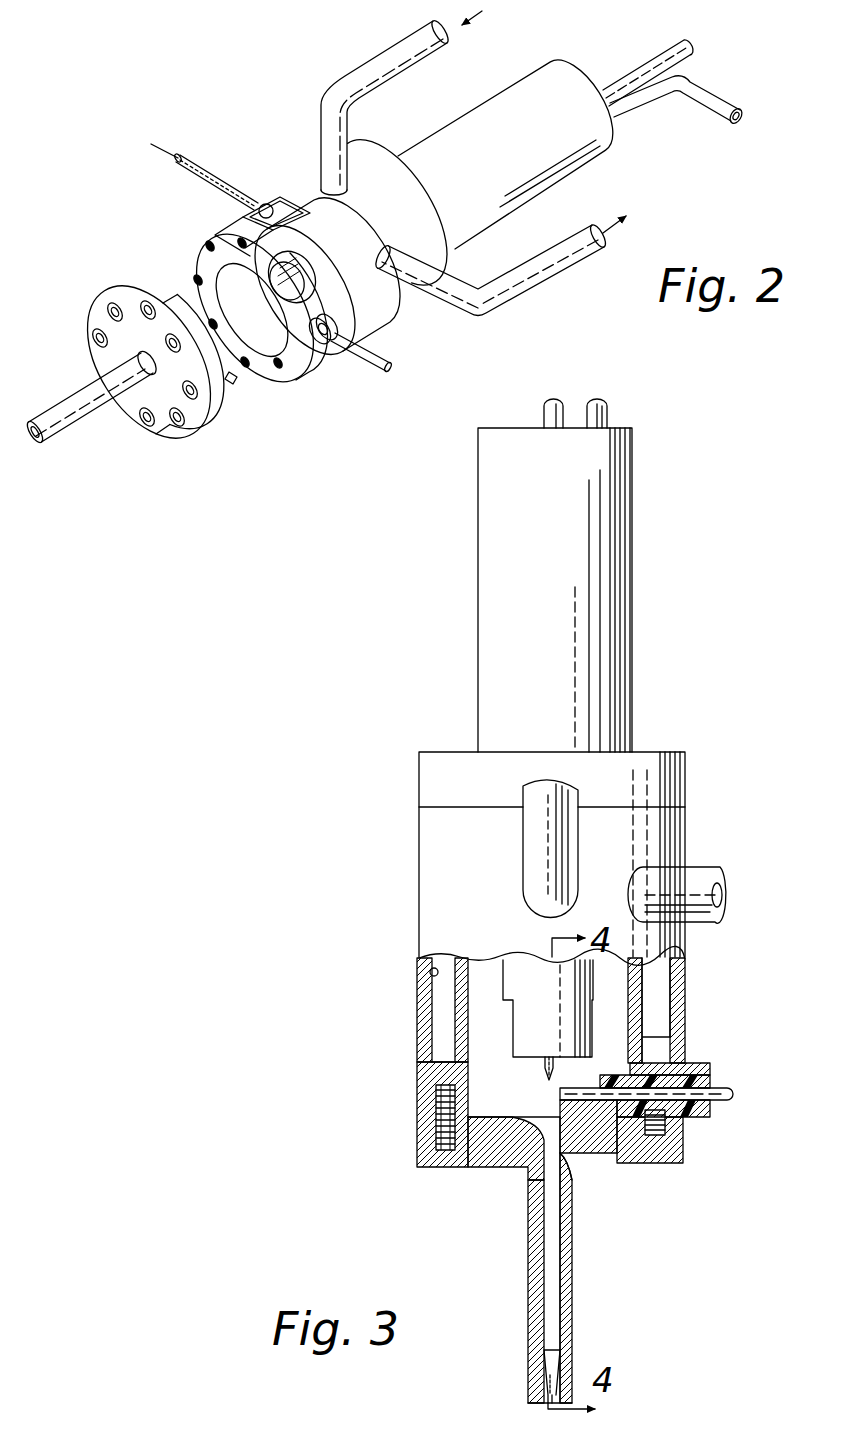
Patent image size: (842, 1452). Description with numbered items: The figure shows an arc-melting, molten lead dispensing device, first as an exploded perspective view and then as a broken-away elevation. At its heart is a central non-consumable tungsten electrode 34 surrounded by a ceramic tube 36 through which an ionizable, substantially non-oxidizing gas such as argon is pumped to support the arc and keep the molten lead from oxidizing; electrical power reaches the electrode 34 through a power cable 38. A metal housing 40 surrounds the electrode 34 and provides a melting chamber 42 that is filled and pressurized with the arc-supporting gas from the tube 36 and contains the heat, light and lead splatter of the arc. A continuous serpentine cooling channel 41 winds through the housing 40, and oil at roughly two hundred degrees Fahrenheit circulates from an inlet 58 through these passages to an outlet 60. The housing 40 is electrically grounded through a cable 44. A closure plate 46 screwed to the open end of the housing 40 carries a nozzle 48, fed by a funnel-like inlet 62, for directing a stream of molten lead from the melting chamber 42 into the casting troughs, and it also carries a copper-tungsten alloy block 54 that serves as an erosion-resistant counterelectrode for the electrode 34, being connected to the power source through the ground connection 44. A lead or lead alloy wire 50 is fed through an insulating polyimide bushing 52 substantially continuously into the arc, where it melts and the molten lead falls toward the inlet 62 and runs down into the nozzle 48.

In FIG. 2, the electrode 34 is at (273, 300).
In FIG. 3, the electrode 34 is at (542, 1073).
In FIG. 2, the ceramic tube / gas inlet tube 36 is at (738, 106).
In FIG. 3, the ceramic tube / gas inlet tube 36 is at (608, 412).
In FIG. 2, the power cable 38 is at (692, 48).
In FIG. 3, the power cable 38 is at (544, 412).
In FIG. 2, the metal housing 40 is at (395, 298).
In FIG. 3, the metal housing 40 is at (417, 980).
In FIG. 2, the cooling channel 41 is at (352, 242).
In FIG. 3, the cooling channel 41 is at (432, 972).
In FIG. 2, the melting chamber 42 is at (222, 273).
In FIG. 2, the ground cable 44 is at (150, 144).
In FIG. 2, the closure plate 46 is at (205, 433).
In FIG. 3, the closure plate 46 is at (676, 1163).
In FIG. 2, the nozzle 48 is at (56, 435).
In FIG. 3, the nozzle 48 is at (528, 1298).
In FIG. 2, the lead wire 50 is at (366, 373).
In FIG. 3, the lead wire 50 is at (736, 1093).
In FIG. 2, the insulating bushing 52 is at (322, 346).
In FIG. 3, the insulating bushing 52 is at (712, 1122).
In FIG. 2, the counterelectrode block 54 is at (235, 386).
In FIG. 2, the oil inlet 58 is at (386, 62).
In FIG. 3, the oil inlet 58 is at (523, 860).
In FIG. 2, the oil outlet 60 is at (548, 262).
In FIG. 3, the oil outlet 60 is at (692, 912).
In FIG. 3, the funnel-like inlet 62 is at (504, 1140).